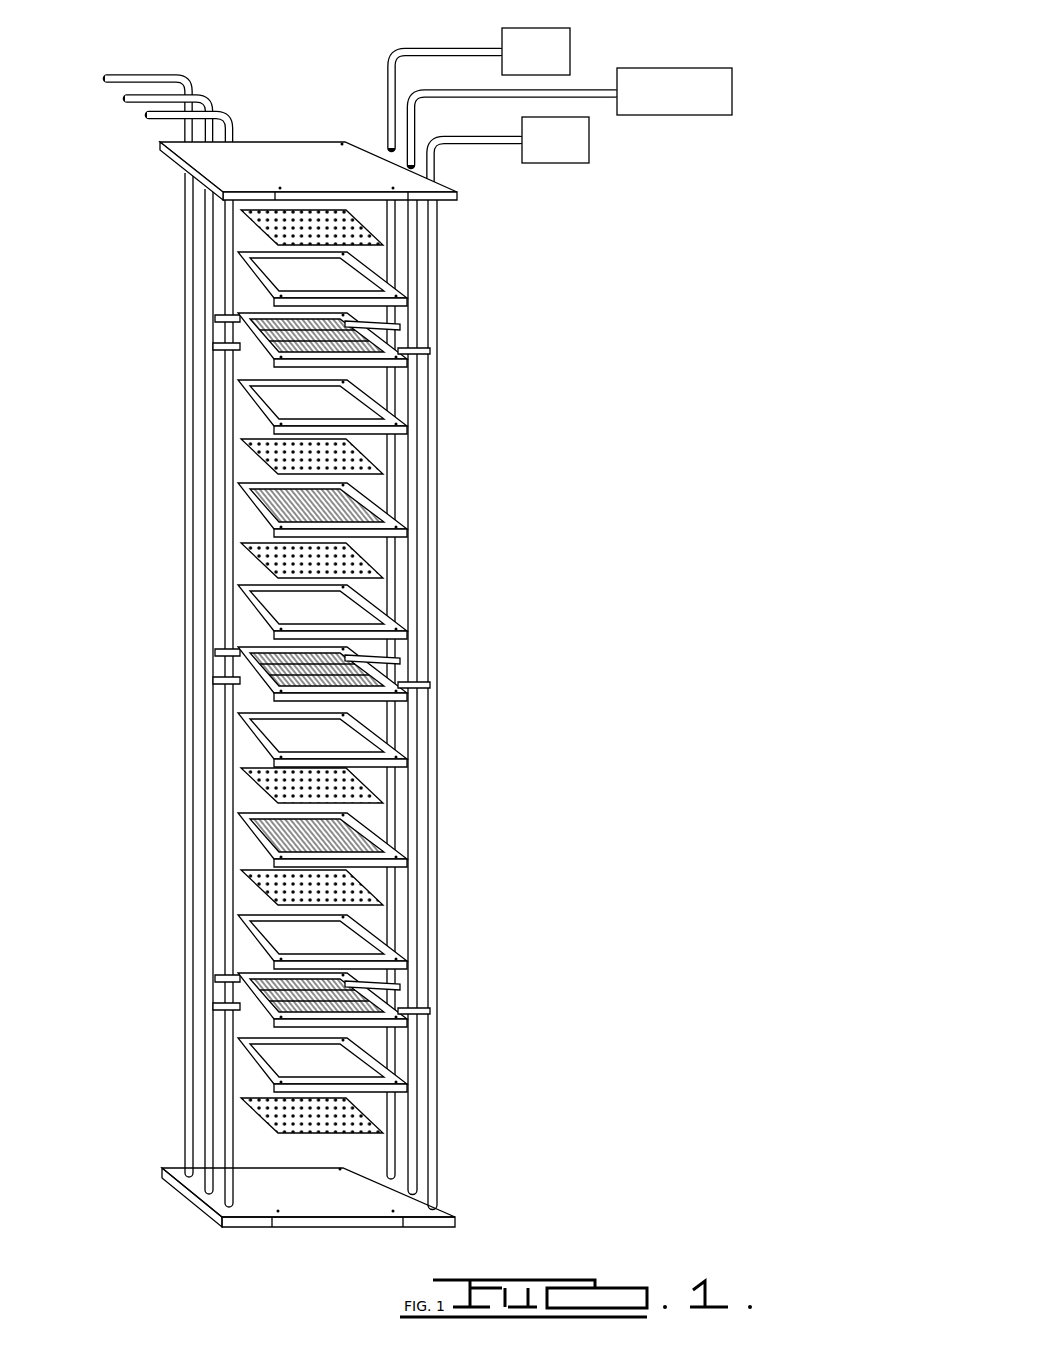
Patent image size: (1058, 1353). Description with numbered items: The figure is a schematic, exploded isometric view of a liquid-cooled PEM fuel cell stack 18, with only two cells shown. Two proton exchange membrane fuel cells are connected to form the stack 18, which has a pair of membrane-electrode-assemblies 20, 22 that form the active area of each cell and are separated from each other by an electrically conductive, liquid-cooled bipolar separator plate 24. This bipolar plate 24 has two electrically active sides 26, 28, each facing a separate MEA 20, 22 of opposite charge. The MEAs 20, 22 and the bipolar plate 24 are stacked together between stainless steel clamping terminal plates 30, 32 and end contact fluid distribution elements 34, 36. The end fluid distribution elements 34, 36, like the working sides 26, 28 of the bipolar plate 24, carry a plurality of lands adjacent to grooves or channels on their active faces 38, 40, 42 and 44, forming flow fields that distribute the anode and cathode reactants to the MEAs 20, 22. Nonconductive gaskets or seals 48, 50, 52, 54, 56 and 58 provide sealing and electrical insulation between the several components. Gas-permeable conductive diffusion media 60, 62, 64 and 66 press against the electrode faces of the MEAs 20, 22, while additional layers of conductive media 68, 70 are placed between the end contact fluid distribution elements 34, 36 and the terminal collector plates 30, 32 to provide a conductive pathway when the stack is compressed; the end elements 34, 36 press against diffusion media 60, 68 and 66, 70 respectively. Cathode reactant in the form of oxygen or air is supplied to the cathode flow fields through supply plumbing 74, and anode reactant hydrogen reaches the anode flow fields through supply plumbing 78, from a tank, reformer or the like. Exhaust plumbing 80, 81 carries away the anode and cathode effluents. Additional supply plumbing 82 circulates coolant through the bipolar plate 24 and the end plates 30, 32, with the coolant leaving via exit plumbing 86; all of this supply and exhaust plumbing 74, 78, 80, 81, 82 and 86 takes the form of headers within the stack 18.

The fuel cell stack 18 is at (658, 251).
The membrane-electrode-assembly 20 is at (242, 516).
The membrane-electrode-assembly 22 is at (400, 830).
The bipolar separator plate 24 is at (304, 679).
The electrically active side 26 is at (350, 665).
The electrically active side 28 is at (362, 714).
The clamping terminal plate 30 is at (338, 178).
The clamping terminal plate 32 is at (340, 1202).
The end contact fluid distribution element 34 is at (301, 343).
The end contact fluid distribution element 36 is at (307, 1006).
The active face 38 is at (352, 328).
The active face 40 is at (378, 382).
The active face 42 is at (357, 1000).
The active face 44 is at (372, 1038).
The gasket 48 is at (247, 408).
The gasket 50 is at (247, 618).
The gasket 52 is at (247, 740).
The gasket 54 is at (247, 947).
The gasket 56 is at (247, 1067).
The gasket 58 is at (247, 282).
The diffusion media 60 is at (250, 455).
The diffusion media 62 is at (255, 568).
The diffusion media 64 is at (248, 791).
The diffusion media 66 is at (247, 890).
The conductive media 68 is at (260, 228).
The conductive media 70 is at (263, 1120).
The supply plumbing 74 is at (386, 102).
The supply plumbing 78 is at (470, 140).
The exhaust plumbing 80 is at (228, 122).
The exhaust plumbing 81 is at (135, 77).
The coolant supply plumbing 82 is at (574, 90).
The coolant exit plumbing 86 is at (192, 97).